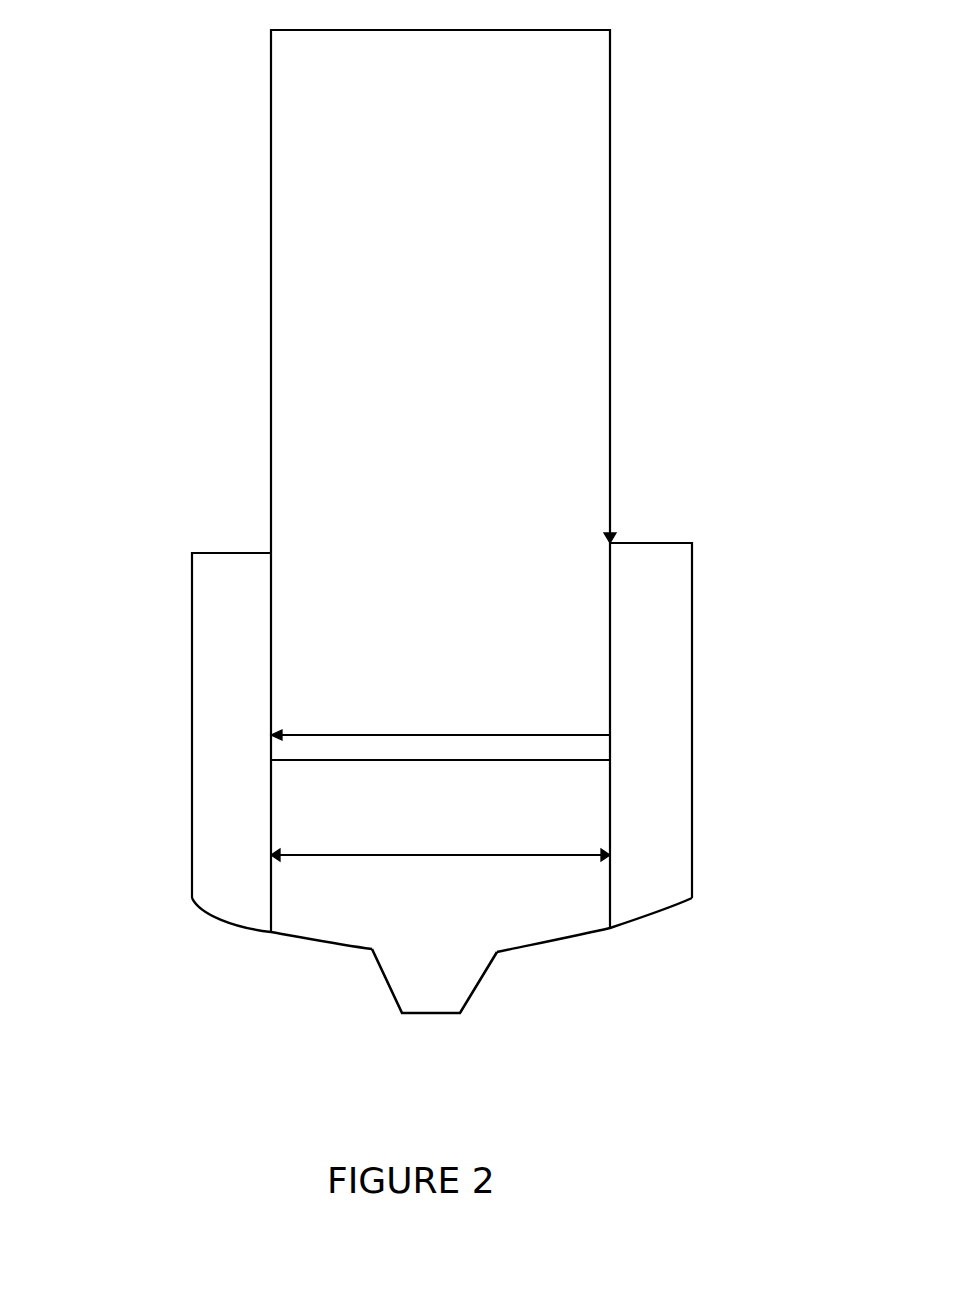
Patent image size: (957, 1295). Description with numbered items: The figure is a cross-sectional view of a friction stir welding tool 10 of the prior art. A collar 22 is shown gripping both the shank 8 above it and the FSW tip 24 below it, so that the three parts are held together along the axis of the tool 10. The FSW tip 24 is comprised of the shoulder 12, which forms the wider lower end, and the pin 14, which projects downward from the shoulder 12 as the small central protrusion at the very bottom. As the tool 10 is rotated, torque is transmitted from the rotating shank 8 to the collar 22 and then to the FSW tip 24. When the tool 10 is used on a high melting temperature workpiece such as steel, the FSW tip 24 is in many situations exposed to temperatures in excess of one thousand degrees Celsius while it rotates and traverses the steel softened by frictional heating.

The shank 8 is at (595, 463).
The tool 10 is at (469, 548).
The shoulder 12 is at (442, 971).
The pin 14 is at (482, 983).
The collar 22 is at (207, 711).
The FSW tip 24 is at (385, 985).